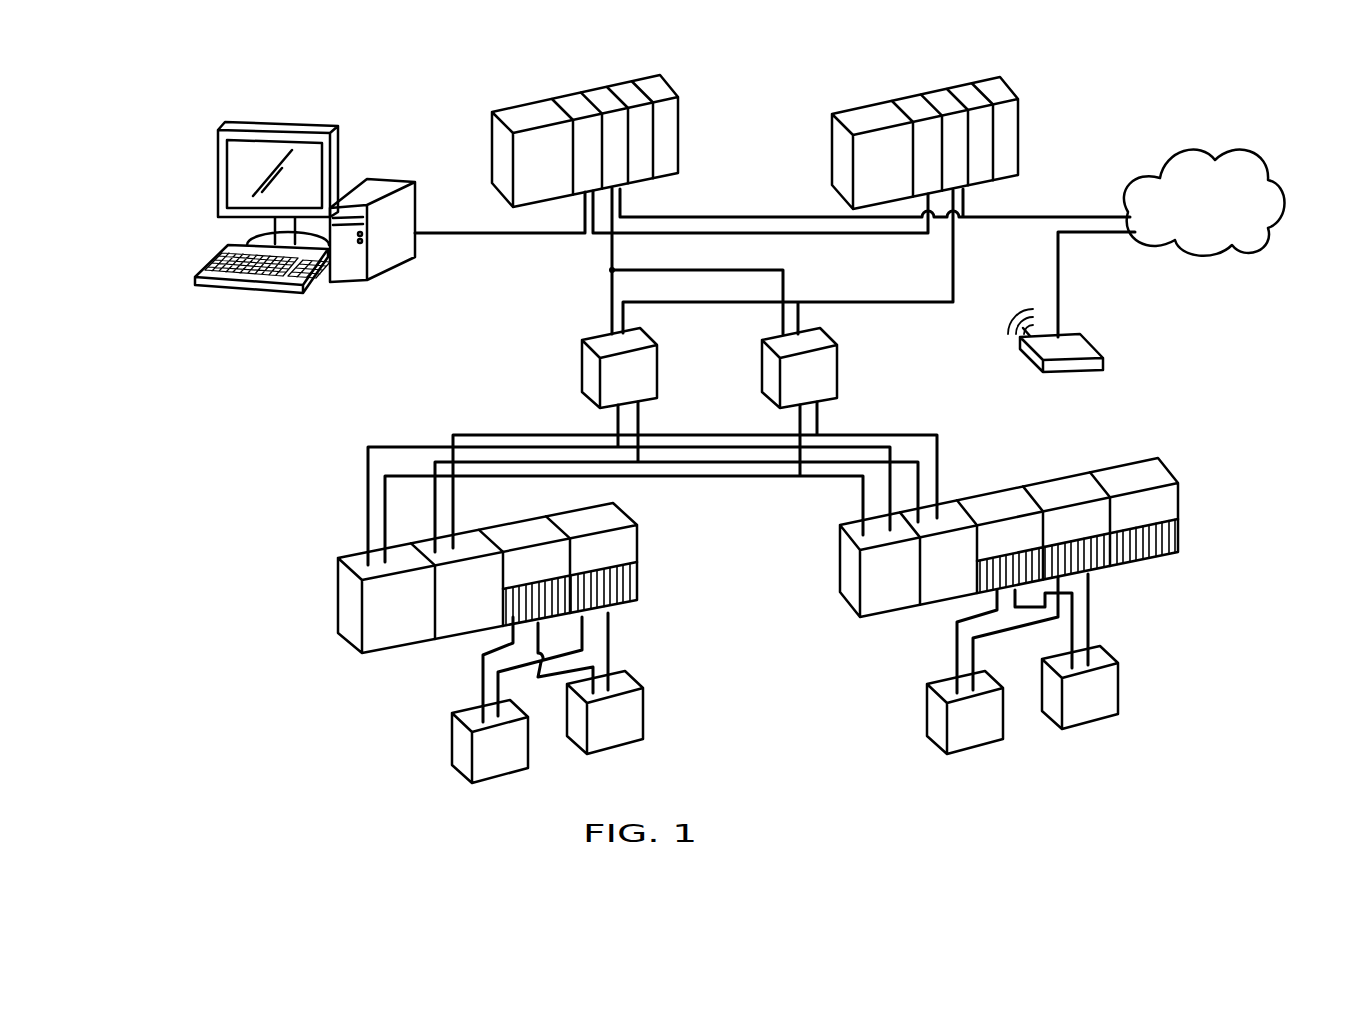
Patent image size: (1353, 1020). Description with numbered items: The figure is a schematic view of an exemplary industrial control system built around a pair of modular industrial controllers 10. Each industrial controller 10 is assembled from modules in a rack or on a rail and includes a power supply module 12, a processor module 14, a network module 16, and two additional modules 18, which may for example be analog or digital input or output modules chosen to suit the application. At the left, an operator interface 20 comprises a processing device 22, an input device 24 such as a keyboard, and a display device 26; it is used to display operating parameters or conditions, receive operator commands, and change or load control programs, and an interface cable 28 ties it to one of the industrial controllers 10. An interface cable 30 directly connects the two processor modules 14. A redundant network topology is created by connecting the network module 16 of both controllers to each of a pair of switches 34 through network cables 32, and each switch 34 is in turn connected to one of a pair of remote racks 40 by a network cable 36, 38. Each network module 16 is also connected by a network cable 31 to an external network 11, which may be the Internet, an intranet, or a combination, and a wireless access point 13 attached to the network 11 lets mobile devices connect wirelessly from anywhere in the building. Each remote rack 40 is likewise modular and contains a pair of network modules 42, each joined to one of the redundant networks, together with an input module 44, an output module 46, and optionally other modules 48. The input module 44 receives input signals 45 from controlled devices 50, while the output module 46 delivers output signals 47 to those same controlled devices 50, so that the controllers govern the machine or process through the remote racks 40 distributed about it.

The industrial controller 10 is at (485, 68).
The external network 11 is at (1172, 155).
The power supply module 12 is at (545, 112).
The wireless access point 13 is at (1098, 347).
The processor module 14 is at (578, 107).
The network module 16 is at (605, 100).
The additional modules 18 is at (650, 92).
The operator interface 20 is at (191, 99).
The processing device 22 is at (386, 185).
The input device 24 is at (212, 258).
The display device 26 is at (218, 172).
The interface cable 28 is at (499, 234).
The interface cable 30 is at (792, 235).
The network cable 31 is at (738, 217).
The network cable 32 is at (616, 264).
The switch 34 is at (588, 368).
The network cable 36 is at (370, 508).
The network cable 38 is at (440, 512).
The remote rack 40 is at (309, 595).
The network module 42 is at (383, 627).
The input module 44 is at (525, 582).
The input signals 45 is at (483, 668).
The output module 46 is at (588, 566).
The output signals 47 is at (496, 690).
The other modules 48 is at (1135, 521).
The controlled devices 50 is at (488, 762).